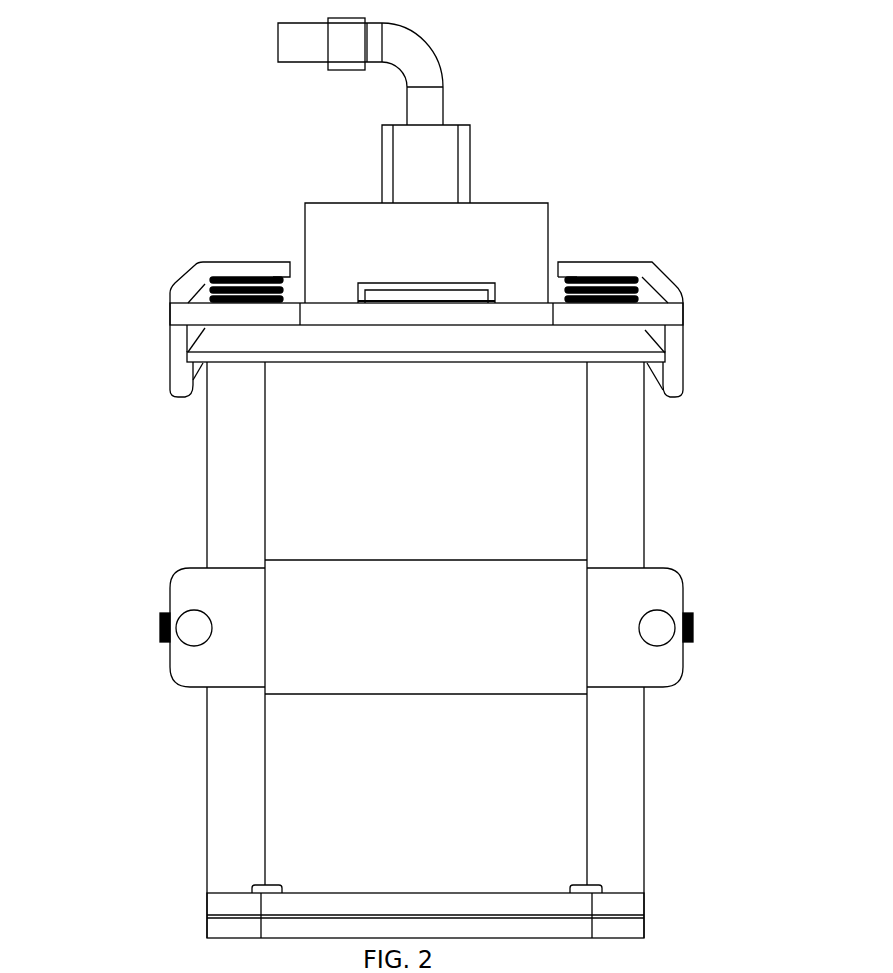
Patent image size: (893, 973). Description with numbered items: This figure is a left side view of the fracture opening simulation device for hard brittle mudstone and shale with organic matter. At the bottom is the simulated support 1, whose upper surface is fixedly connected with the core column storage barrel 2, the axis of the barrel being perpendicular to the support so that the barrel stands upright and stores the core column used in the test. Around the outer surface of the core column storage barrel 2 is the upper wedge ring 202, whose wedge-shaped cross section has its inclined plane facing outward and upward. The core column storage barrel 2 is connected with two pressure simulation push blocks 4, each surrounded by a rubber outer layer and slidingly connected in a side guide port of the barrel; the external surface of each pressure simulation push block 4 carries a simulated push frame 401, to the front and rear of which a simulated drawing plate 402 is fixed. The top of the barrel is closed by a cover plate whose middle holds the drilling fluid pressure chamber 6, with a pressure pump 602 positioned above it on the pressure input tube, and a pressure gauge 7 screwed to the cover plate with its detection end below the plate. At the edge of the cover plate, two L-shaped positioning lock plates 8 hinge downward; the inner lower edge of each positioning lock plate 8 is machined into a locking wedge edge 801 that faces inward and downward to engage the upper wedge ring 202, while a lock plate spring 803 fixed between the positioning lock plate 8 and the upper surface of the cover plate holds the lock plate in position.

The simulated support 1 is at (300, 893).
The core column storage barrel 2 is at (645, 857).
The pressure simulation push block 4 is at (553, 853).
The drilling fluid pressure chamber 6 is at (515, 232).
The pressure gauge 7 is at (418, 283).
The positioning lock plate 8 is at (203, 290).
The upper wedge ring 202 is at (250, 352).
The simulated push frame 401 is at (557, 645).
The simulated drawing plate 402 is at (190, 667).
The pressure pump 602 is at (442, 170).
The locking wedge edge 801 is at (648, 365).
The lock plate spring 803 is at (612, 273).